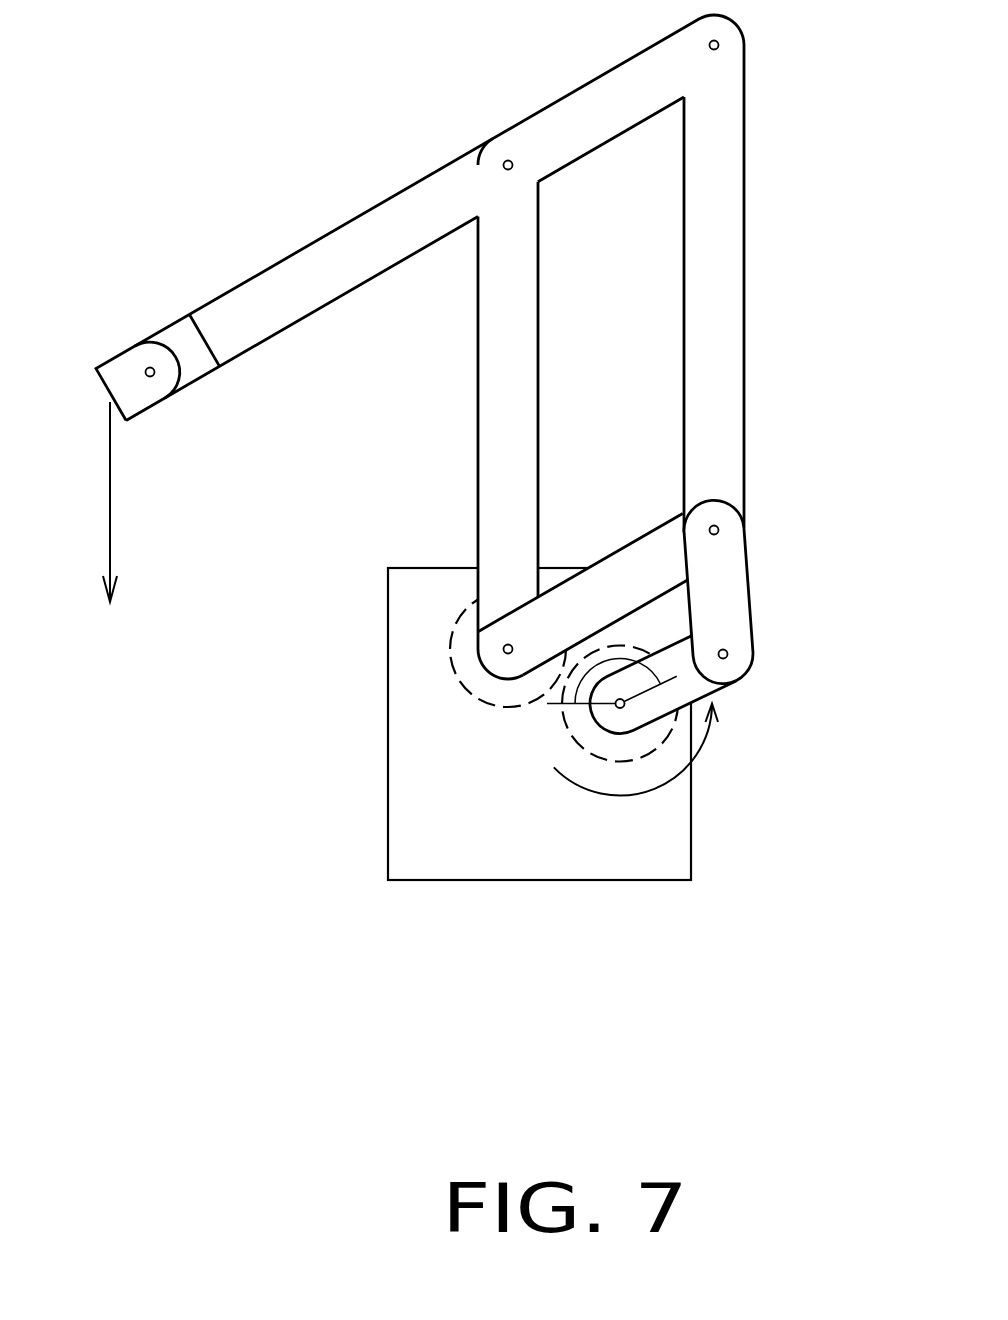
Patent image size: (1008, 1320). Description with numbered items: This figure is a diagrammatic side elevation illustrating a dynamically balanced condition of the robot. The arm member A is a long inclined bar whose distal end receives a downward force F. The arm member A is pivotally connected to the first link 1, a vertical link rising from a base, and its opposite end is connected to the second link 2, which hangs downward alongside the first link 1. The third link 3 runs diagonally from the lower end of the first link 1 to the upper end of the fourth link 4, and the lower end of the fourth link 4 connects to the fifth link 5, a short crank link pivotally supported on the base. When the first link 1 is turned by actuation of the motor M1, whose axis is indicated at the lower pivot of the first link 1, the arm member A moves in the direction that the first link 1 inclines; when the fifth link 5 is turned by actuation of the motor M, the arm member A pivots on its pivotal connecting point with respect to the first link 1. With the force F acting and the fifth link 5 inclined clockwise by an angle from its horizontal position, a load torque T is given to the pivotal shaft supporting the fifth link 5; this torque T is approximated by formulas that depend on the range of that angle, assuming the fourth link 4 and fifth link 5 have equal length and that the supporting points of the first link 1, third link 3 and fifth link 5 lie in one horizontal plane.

The arm member A is at (338, 228).
The first link 1 is at (478, 386).
The second link 2 is at (744, 303).
The third link 3 is at (632, 540).
The fourth link 4 is at (749, 602).
The fifth link 5 is at (740, 690).
The motor M is at (565, 731).
The motor M1 is at (448, 648).
The force F is at (126, 504).
The load torque T is at (650, 750).